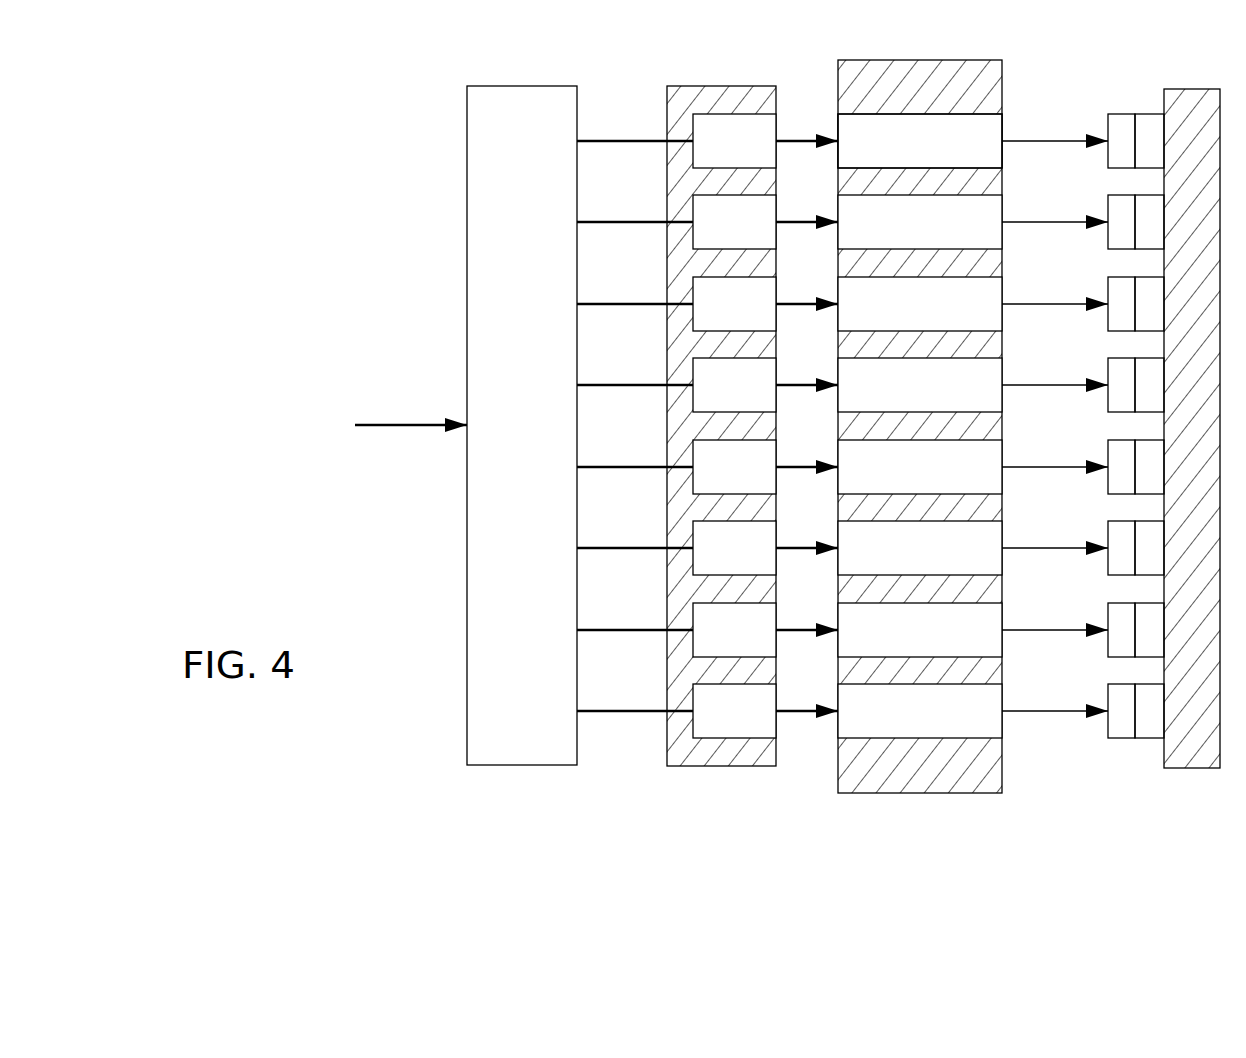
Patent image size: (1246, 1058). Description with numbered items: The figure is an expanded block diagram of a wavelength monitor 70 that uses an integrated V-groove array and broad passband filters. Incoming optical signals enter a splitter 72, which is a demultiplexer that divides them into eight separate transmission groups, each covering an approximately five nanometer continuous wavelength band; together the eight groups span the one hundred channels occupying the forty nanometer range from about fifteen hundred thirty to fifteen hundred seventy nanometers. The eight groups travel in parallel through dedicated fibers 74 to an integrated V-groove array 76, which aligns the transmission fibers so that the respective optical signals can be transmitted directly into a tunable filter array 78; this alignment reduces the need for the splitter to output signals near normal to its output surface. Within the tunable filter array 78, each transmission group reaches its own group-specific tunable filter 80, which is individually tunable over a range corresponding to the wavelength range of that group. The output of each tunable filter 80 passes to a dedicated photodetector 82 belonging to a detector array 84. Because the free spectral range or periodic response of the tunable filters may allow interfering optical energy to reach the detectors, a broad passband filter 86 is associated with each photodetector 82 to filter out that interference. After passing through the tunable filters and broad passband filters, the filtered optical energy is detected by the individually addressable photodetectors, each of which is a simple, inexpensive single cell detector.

The wavelength monitor 70 is at (330, 99).
The splitter 72 is at (502, 86).
The dedicated fibers 74 is at (633, 140).
The integrated V-groove array 76 is at (716, 86).
The tunable filter array 78 is at (1002, 53).
The tunable filter 80 is at (908, 153).
The photodetector 82 is at (1160, 115).
The detector array 84 is at (1225, 83).
The broad passband filter 86 is at (1117, 115).